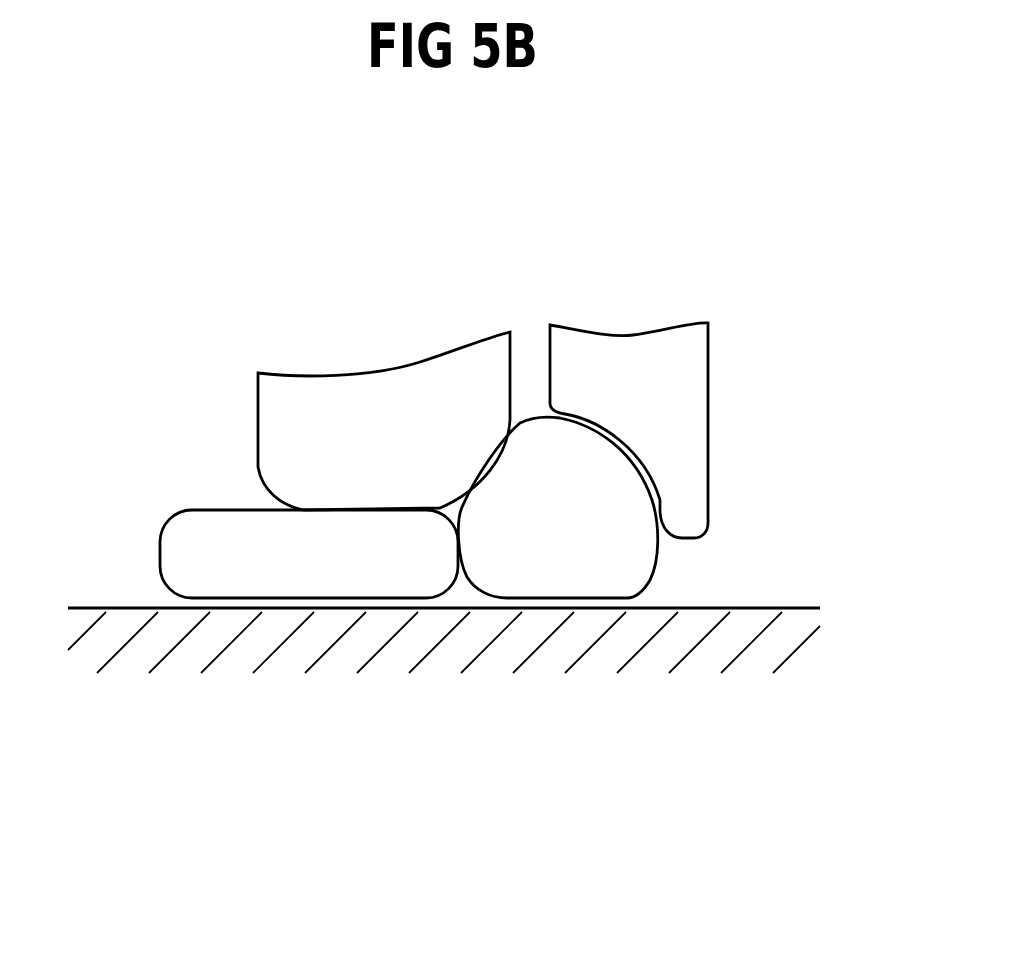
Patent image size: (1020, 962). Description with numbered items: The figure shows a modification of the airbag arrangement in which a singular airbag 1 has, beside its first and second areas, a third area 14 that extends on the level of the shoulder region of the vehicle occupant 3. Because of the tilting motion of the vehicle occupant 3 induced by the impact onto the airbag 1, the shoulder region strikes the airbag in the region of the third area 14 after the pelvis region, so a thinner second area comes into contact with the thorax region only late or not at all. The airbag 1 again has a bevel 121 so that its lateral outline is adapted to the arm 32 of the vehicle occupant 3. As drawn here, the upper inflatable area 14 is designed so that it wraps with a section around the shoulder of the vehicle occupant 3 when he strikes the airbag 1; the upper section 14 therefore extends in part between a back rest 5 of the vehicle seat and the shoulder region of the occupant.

The airbag 1 is at (543, 652).
The vehicle occupant 3 is at (332, 413).
The back rest 5 is at (687, 432).
The third area 14 is at (608, 570).
The arm 32 is at (297, 570).
The bevel 121 is at (470, 578).